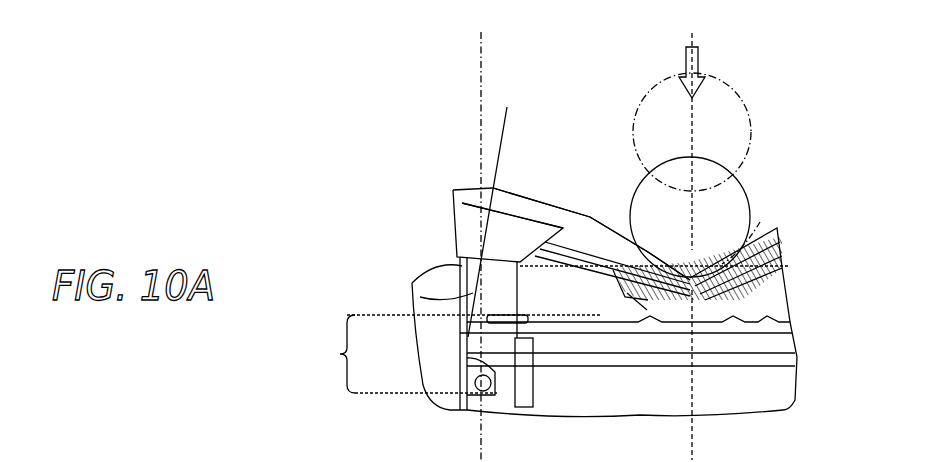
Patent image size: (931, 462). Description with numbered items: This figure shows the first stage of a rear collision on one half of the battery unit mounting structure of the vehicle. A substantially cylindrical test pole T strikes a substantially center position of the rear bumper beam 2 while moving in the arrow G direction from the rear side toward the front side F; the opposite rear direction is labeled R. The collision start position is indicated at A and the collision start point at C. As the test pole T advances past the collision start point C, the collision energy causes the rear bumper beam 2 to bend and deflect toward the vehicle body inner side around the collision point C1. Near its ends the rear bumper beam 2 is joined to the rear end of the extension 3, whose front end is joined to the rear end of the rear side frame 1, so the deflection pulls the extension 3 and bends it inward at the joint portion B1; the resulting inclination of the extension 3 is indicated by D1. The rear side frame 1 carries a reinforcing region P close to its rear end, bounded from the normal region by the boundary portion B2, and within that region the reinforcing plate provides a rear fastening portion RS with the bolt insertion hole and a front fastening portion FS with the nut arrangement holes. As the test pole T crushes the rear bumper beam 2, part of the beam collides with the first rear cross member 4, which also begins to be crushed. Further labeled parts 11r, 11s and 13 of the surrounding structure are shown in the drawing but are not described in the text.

The rear side frame 1 is at (473, 293).
The rear bumper beam 2 is at (531, 199).
The extension 3 is at (473, 238).
The first rear cross member 4 is at (585, 285).
The platen / support rail 11r is at (772, 349).
The support block 11s is at (520, 417).
The holder 13 is at (455, 404).
The collision start position A is at (692, 185).
The joint portion B1 is at (453, 257).
The boundary portion B2 is at (343, 315).
The inclination D1 is at (498, 112).
The test pole T is at (650, 180).
The collision start point C is at (715, 158).
The collision point C1 is at (745, 252).
The arrow G direction G is at (700, 52).
The reinforcing region P is at (411, 354).
The rear fastening portion RS is at (455, 322).
The front fastening portion FS is at (497, 374).
The rear direction R is at (857, 215).
The front side F is at (857, 372).